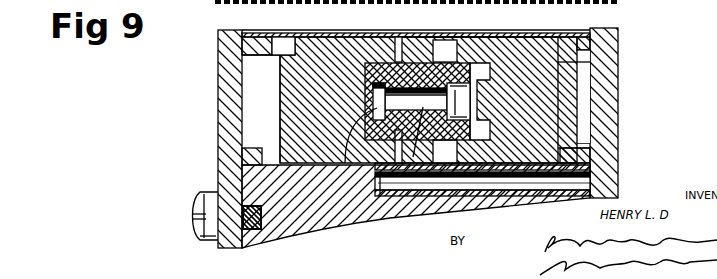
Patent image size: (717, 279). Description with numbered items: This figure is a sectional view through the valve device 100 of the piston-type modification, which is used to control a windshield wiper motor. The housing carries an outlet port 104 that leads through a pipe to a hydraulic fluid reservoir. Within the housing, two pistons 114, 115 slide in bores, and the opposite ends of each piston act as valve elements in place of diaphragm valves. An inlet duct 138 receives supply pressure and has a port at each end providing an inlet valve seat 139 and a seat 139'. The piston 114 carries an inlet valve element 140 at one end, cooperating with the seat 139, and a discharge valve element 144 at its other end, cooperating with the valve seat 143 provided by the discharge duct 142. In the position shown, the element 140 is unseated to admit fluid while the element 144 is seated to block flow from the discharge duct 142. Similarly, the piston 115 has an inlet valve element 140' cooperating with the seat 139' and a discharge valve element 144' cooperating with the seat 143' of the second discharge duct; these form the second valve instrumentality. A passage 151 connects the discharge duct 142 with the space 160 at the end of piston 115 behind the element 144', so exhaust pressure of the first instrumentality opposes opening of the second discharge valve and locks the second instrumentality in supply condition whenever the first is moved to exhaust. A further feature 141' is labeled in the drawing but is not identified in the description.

The valve device 100 is at (637, 38).
The outlet port 104 is at (444, 0).
The piston 114 is at (547, 36).
The piston 115 is at (367, 32).
The inlet duct 138 is at (400, 176).
The inlet valve seat 139 is at (455, 102).
The seat 139' is at (380, 171).
The inlet valve element 140 is at (422, 101).
The inlet valve element 140' is at (416, 104).
The recess 141' is at (274, 34).
The discharge duct 142 is at (243, 132).
The valve seat 143 is at (619, 61).
The seat 143' is at (224, 71).
The discharge valve element 144 is at (627, 96).
The discharge valve element 144' is at (221, 109).
The passage 151 is at (437, 178).
The space 160 is at (418, 0).